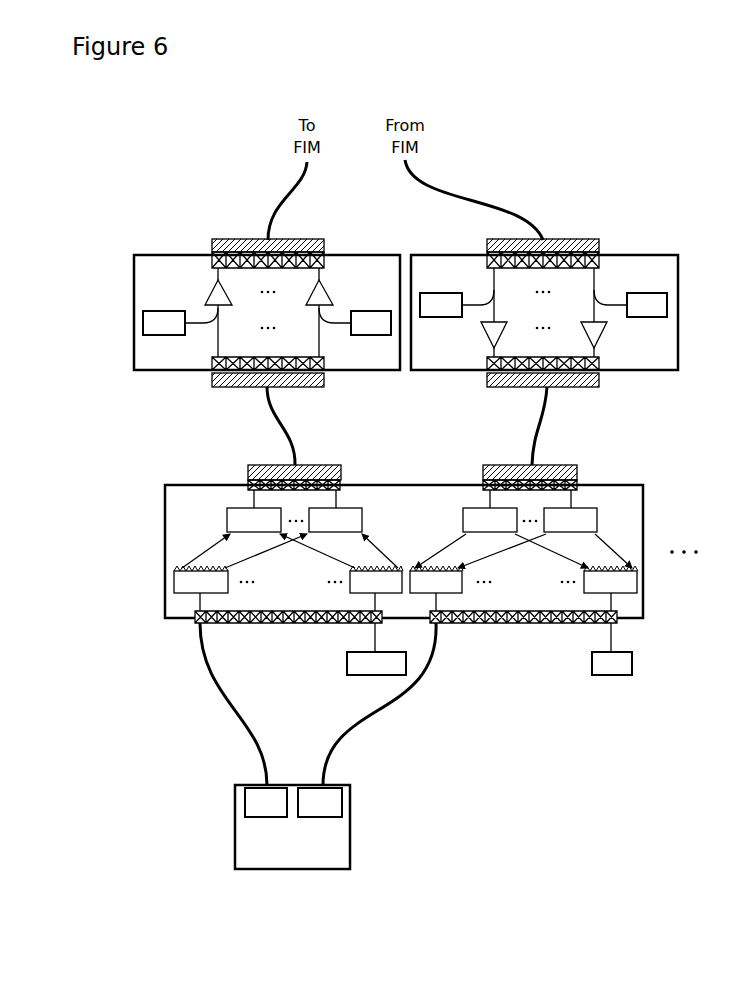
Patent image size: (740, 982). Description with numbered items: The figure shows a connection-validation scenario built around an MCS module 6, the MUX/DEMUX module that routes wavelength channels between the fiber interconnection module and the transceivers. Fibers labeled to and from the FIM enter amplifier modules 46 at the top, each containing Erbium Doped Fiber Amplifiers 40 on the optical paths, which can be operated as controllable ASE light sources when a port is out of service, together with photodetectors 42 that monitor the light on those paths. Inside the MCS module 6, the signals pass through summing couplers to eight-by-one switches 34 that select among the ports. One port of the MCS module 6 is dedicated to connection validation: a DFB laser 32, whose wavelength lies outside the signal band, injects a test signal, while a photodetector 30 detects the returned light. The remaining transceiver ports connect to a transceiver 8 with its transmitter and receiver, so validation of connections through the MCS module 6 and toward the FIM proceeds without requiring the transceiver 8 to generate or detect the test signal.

The photonic integrated circuit module 46 is at (166, 255).
The Erbium Doped Fiber Amplifier (EDFA) 40 is at (205, 292).
The ASE source 42 is at (143, 322).
The MCS module 6 is at (431, 535).
The WDM filter 34 is at (230, 578).
The DFB laser 32 is at (346, 661).
The photodetector (PD) 30 is at (592, 663).
The transceiver 8 is at (238, 830).